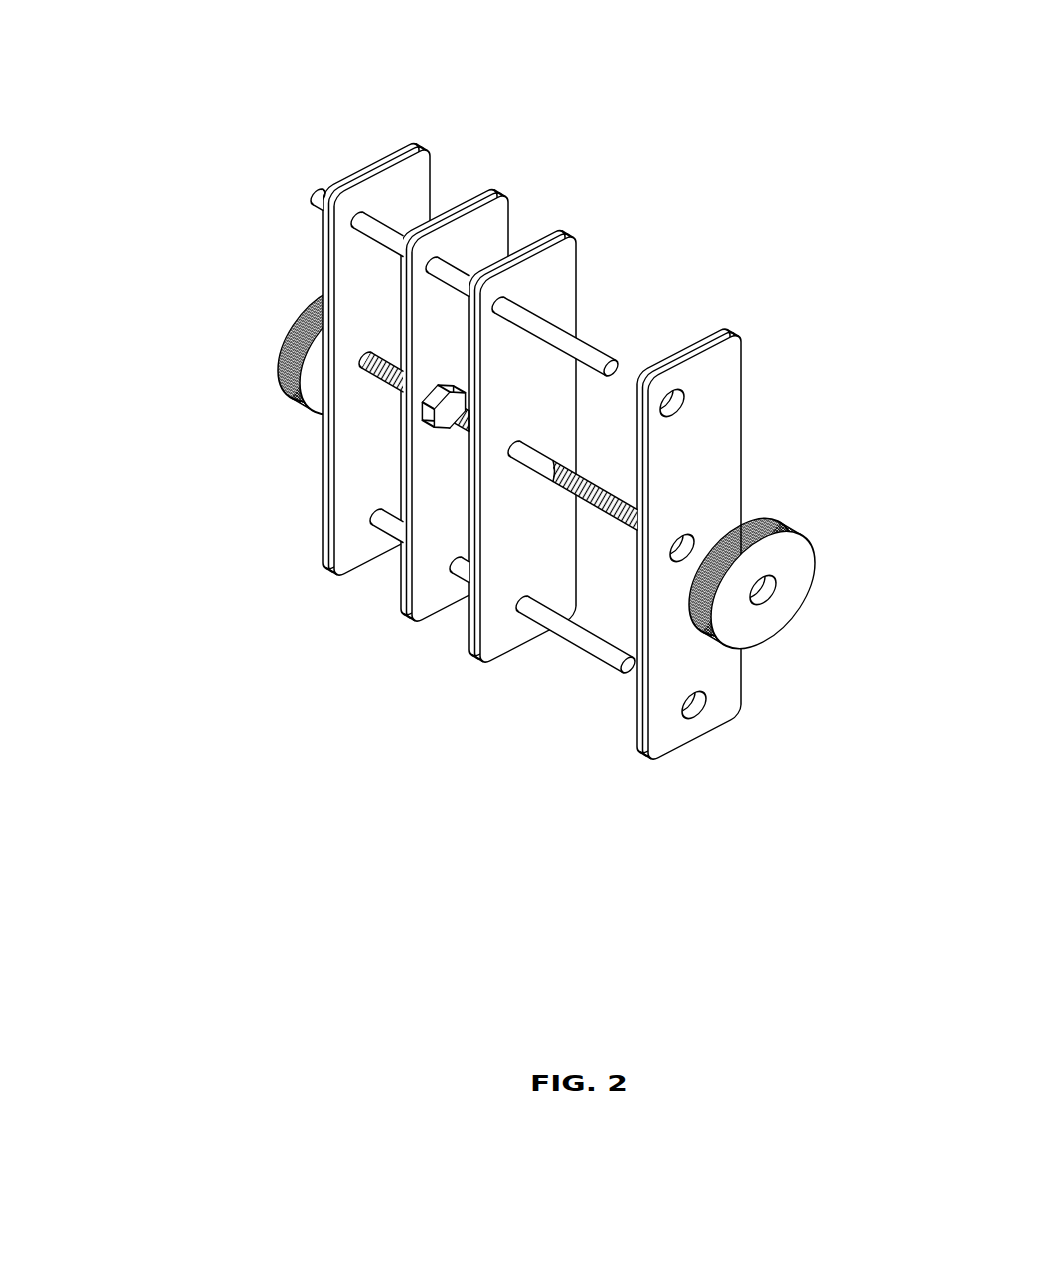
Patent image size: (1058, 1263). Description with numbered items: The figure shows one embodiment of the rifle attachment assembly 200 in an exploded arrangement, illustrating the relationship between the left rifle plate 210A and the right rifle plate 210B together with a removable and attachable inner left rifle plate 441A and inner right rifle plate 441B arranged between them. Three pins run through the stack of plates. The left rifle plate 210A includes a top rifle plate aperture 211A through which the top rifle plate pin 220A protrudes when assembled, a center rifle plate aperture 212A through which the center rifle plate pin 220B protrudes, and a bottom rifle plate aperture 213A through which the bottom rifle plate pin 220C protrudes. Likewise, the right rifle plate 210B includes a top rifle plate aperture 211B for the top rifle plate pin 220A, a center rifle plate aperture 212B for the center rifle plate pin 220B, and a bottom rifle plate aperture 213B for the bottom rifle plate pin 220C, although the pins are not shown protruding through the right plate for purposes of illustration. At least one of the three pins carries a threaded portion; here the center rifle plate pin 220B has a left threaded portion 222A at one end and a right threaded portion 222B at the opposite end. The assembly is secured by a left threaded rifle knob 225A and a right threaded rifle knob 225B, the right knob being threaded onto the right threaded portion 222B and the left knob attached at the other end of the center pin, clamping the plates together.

The rifle attachment assembly 200 is at (501, 451).
The left rifle plate 210A is at (413, 182).
The right rifle plate 210B is at (730, 698).
The top rifle plate aperture 211A is at (352, 203).
The top rifle plate aperture 211B is at (670, 393).
The center rifle plate aperture 212A is at (360, 352).
The center rifle plate aperture 212B is at (672, 560).
The bottom rifle plate aperture 213A is at (390, 523).
The bottom rifle plate aperture 213B is at (686, 716).
The top rifle plate pin 220A is at (553, 330).
The center rifle plate pin 220B is at (398, 384).
The bottom rifle plate pin 220C is at (573, 637).
The left threaded portion 222A is at (357, 372).
The right threaded portion 222B is at (570, 507).
The left threaded rifle knob 225A is at (280, 353).
The right threaded rifle knob 225B is at (805, 532).
The inner left rifle plate 441A is at (494, 190).
The inner right rifle plate 441B is at (557, 260).